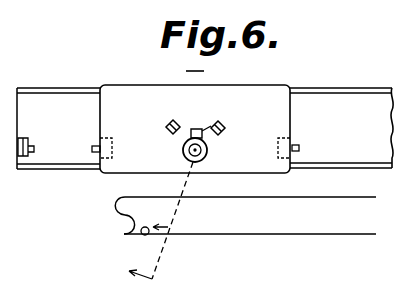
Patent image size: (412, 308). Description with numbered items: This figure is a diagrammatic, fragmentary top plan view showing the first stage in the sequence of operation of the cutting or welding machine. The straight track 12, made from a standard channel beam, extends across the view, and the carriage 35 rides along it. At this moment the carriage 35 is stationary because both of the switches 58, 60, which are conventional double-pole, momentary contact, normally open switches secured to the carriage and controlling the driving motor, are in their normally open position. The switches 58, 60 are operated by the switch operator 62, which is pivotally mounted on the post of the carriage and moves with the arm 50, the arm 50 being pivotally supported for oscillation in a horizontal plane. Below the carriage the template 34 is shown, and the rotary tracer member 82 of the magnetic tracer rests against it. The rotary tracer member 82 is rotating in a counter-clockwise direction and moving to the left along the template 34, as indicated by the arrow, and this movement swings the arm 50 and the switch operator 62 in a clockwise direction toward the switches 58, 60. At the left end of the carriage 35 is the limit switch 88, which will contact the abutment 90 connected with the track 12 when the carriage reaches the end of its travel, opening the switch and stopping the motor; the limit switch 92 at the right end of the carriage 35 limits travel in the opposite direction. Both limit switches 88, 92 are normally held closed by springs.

The track 12 is at (77, 92).
The carriage 35 is at (244, 93).
The abutment 90 is at (33, 138).
The limit switch 88 is at (95, 147).
The limit switch 92 is at (295, 146).
The switch 58 is at (168, 125).
The switch 60 is at (223, 126).
The switch operator 62 is at (195, 129).
The arm 50 is at (157, 262).
The template 34 is at (287, 234).
The rotary tracer member 82 is at (143, 233).